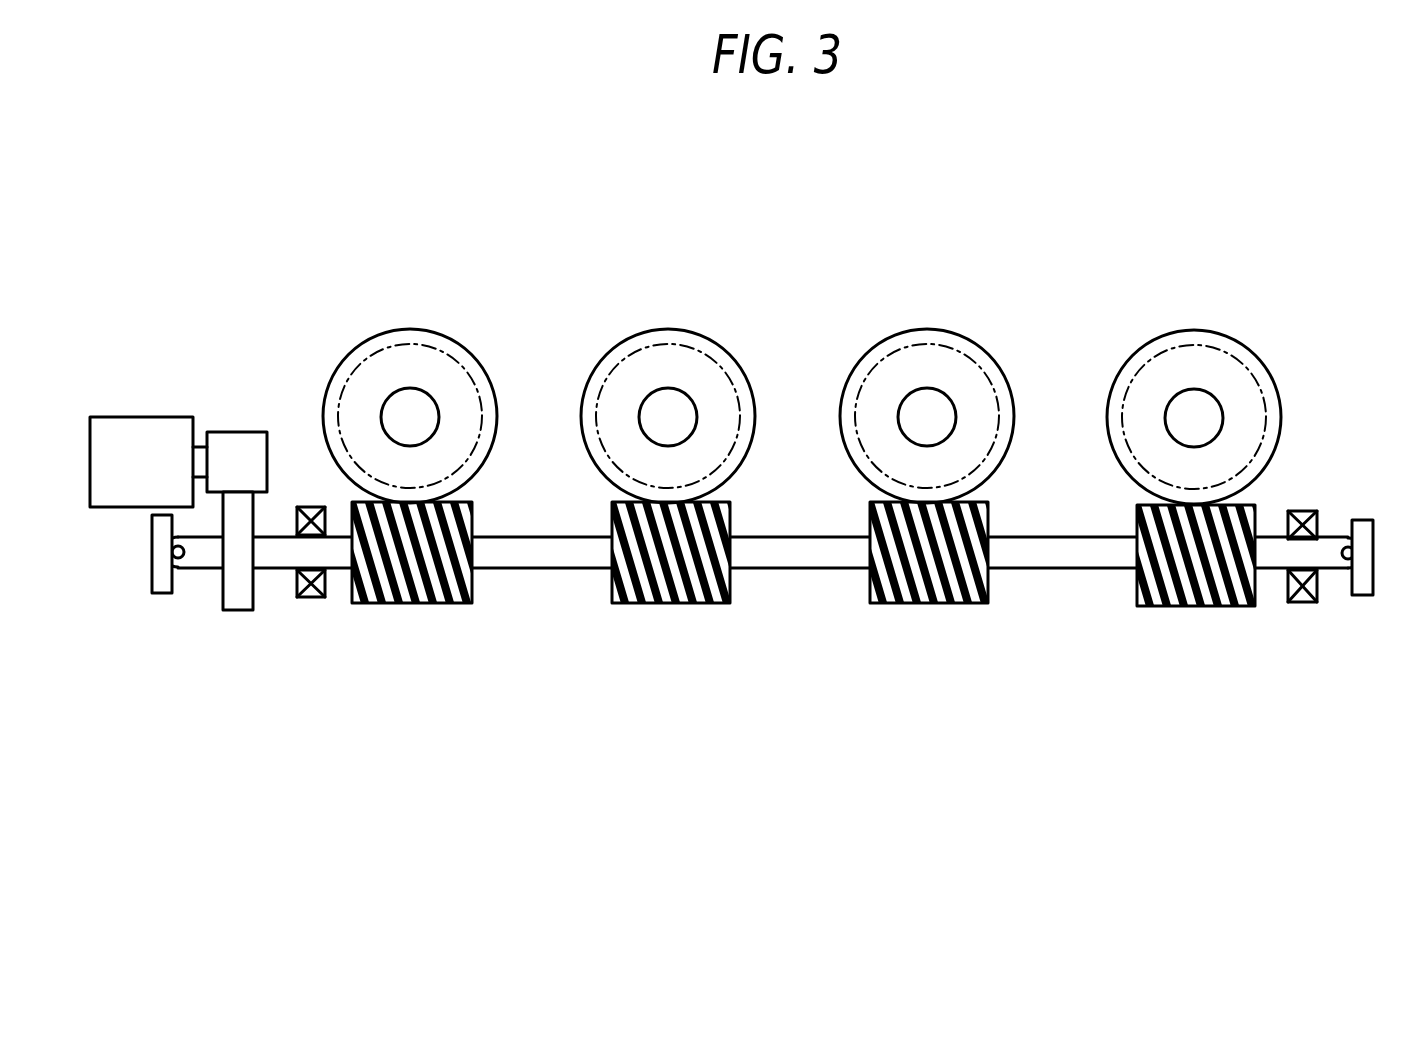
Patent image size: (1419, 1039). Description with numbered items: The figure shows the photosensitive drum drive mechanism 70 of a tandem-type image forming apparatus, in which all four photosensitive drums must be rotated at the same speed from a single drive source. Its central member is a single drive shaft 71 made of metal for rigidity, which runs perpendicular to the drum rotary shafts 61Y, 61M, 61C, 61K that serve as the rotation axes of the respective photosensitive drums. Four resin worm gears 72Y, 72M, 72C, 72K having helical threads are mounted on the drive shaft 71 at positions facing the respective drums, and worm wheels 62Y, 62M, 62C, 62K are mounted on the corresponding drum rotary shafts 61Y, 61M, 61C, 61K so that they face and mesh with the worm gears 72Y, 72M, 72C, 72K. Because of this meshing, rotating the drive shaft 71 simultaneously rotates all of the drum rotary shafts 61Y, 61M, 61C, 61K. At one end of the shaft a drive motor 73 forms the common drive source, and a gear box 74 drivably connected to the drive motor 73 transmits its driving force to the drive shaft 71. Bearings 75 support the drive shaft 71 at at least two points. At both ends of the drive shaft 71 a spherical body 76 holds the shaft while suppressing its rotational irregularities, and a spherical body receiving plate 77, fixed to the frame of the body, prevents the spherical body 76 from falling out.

The photosensitive drum drive mechanism 70 is at (947, 818).
The drive shaft 71 is at (795, 568).
The worm gear 72K is at (413, 603).
The worm gear 72C is at (672, 603).
The worm gear 72M is at (930, 603).
The worm gear 72Y is at (1200, 606).
The worm wheel 62K is at (410, 328).
The worm wheel 62C is at (667, 328).
The worm wheel 62M is at (924, 328).
The worm wheel 62Y is at (1193, 330).
The drum rotary shaft 61K is at (434, 398).
The drum rotary shaft 61C is at (692, 398).
The drum rotary shaft 61M is at (951, 400).
The drum rotary shaft 61Y is at (1222, 400).
The drive motor 73 is at (138, 417).
The gear box 74 is at (233, 400).
The bearing 75 is at (320, 597).
The spherical body 76 is at (180, 568).
The spherical body receiving plate 77 is at (163, 593).